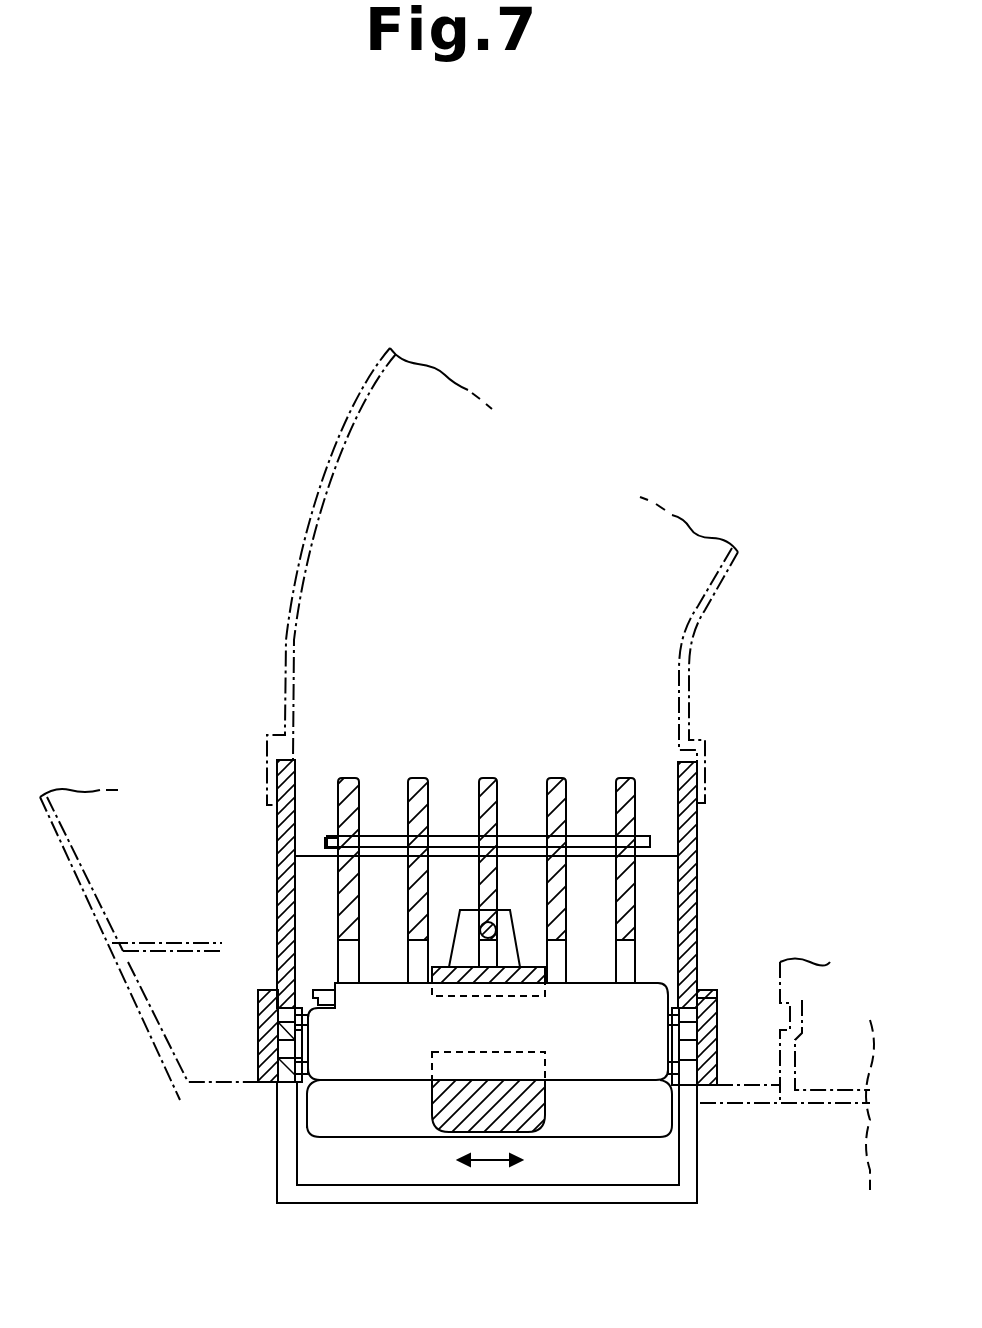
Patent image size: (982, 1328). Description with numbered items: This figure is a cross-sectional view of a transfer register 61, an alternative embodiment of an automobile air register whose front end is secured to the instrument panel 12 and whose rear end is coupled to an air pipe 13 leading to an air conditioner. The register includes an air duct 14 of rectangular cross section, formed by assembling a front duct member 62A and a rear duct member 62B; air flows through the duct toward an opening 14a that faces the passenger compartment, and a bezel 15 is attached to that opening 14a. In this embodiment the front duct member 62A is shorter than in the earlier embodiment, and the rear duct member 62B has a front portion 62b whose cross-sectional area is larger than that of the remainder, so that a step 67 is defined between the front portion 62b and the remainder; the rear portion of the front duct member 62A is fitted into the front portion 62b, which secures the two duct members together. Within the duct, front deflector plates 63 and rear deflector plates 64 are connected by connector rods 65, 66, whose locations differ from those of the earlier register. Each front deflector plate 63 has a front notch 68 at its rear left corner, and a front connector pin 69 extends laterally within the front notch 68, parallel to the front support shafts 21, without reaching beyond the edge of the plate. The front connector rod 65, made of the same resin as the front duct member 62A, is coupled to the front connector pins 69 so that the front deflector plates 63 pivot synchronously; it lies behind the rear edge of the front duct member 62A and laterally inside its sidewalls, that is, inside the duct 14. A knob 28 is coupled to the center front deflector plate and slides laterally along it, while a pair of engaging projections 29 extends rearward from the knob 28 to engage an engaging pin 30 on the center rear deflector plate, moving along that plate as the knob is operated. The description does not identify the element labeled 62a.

The instrument panel 12 is at (859, 1126).
The air pipe 13 is at (291, 578).
The air duct 14 is at (700, 818).
The opening 14a is at (697, 1165).
The bezel 15 is at (710, 1108).
The front support shafts 21 is at (700, 1042).
The knob 28 is at (540, 1115).
The engaging projections 29 is at (530, 935).
The engaging pin 30 is at (455, 935).
The transfer register 61 is at (274, 840).
The bearing block 62a is at (258, 1012).
The front portion 62b is at (259, 1062).
The front duct member 62A is at (700, 1045).
The rear duct member 62B is at (698, 856).
The front deflector plates 63 is at (325, 1075).
The rear deflector plates 64 is at (420, 778).
The front connector rod 65 is at (334, 1012).
The connector rod 66 is at (329, 836).
The step 67 is at (716, 998).
The front notch 68 is at (290, 992).
The front connector pin 69 is at (322, 988).